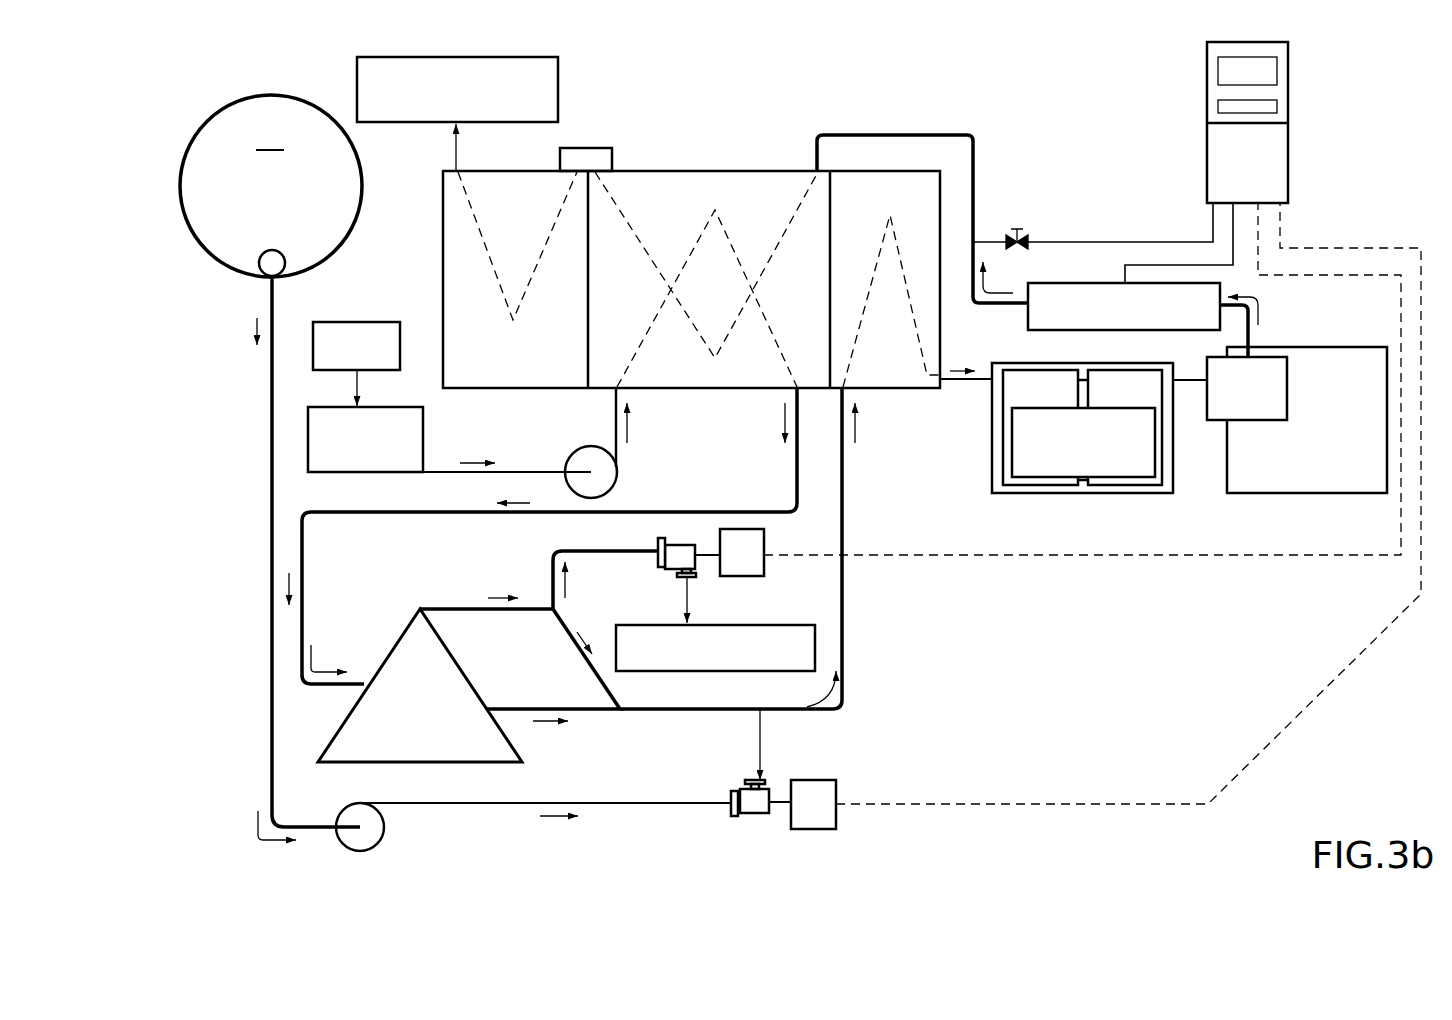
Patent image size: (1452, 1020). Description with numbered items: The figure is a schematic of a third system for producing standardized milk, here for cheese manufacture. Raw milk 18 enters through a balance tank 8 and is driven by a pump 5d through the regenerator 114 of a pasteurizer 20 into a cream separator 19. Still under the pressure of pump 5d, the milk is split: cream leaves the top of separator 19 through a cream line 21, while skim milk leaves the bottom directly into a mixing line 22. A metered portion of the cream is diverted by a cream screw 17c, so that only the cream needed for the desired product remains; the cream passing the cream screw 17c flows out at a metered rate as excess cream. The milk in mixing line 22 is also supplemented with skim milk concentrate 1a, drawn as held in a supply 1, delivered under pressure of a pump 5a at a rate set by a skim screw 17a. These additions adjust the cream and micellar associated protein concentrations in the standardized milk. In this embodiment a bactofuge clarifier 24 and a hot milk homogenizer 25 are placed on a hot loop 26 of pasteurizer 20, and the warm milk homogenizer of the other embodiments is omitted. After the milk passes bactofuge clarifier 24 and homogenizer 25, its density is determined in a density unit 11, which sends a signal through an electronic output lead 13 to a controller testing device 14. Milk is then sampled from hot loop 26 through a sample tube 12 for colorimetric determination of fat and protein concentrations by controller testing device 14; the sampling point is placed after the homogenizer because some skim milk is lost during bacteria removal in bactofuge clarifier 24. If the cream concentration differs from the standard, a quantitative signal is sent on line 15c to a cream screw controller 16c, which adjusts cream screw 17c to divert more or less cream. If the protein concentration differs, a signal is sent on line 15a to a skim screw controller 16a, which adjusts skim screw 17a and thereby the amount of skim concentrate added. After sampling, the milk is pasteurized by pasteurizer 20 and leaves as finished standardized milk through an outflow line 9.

The skim concentrate tank 1 is at (258, 94).
The skim milk concentrate 1a is at (269, 166).
The outflow line 9 is at (357, 90).
The pasteurizer 20 is at (717, 210).
The regenerator 114 is at (626, 169).
The hot loop 26 is at (957, 134).
The controller testing device 14 is at (1290, 95).
The sample tube 12 is at (1117, 241).
The electronic output lead 13 is at (1125, 280).
The density unit 11 is at (1028, 318).
The raw milk 18 is at (367, 321).
The balance tank 8 is at (365, 473).
The pump 5d is at (617, 468).
The bactofuge clarifier 24 is at (1052, 494).
The hot milk homogenizer 25 is at (1305, 494).
The line 15c is at (1020, 556).
The cream line 21 is at (462, 605).
The cream separator 19 is at (345, 722).
The cream screw 17c is at (660, 570).
The cream screw controller 16c is at (742, 578).
The mixing line 22 is at (668, 712).
The pump 5a is at (386, 828).
The skim screw 17a is at (731, 816).
The skim screw controller 16a is at (810, 830).
The line 15a is at (1022, 806).